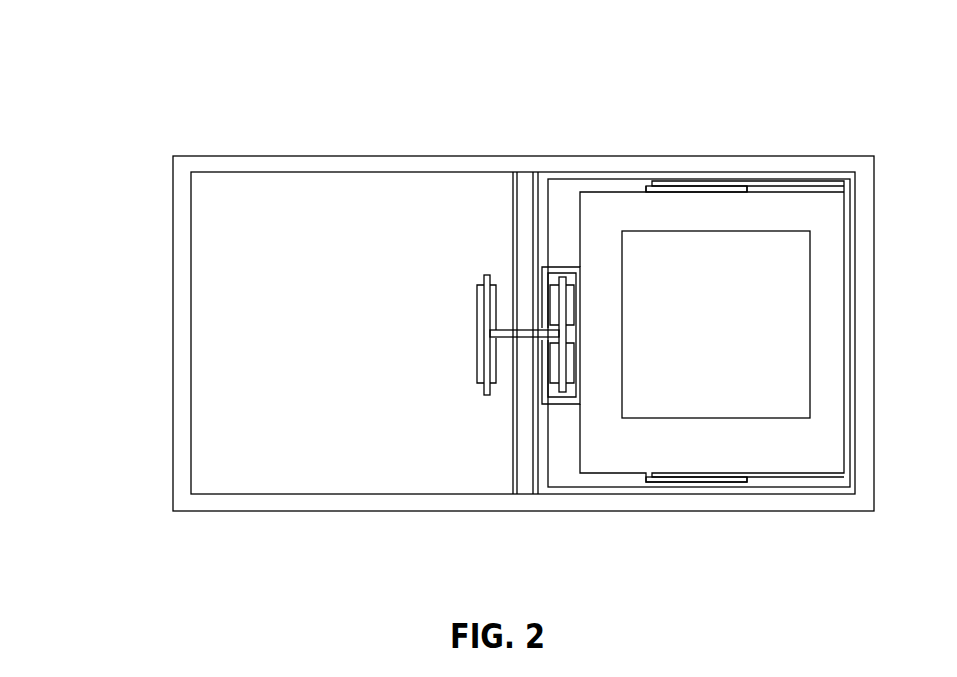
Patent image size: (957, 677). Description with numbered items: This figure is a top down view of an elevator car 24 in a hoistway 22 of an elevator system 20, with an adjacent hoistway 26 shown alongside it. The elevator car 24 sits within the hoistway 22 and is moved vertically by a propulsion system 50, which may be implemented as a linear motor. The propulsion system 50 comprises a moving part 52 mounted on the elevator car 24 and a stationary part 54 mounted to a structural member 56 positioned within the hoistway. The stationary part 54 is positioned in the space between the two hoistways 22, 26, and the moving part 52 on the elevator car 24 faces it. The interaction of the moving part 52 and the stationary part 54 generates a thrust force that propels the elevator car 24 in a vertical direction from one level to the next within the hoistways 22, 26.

The elevator system 20 is at (130, 77).
The hoistway 22 is at (792, 168).
The elevator car 24 is at (780, 448).
The hoistway 26 is at (267, 202).
The propulsion system 50 is at (478, 266).
The moving part 52 is at (579, 422).
The stationary part 54 is at (478, 310).
The structural member 56 is at (497, 345).